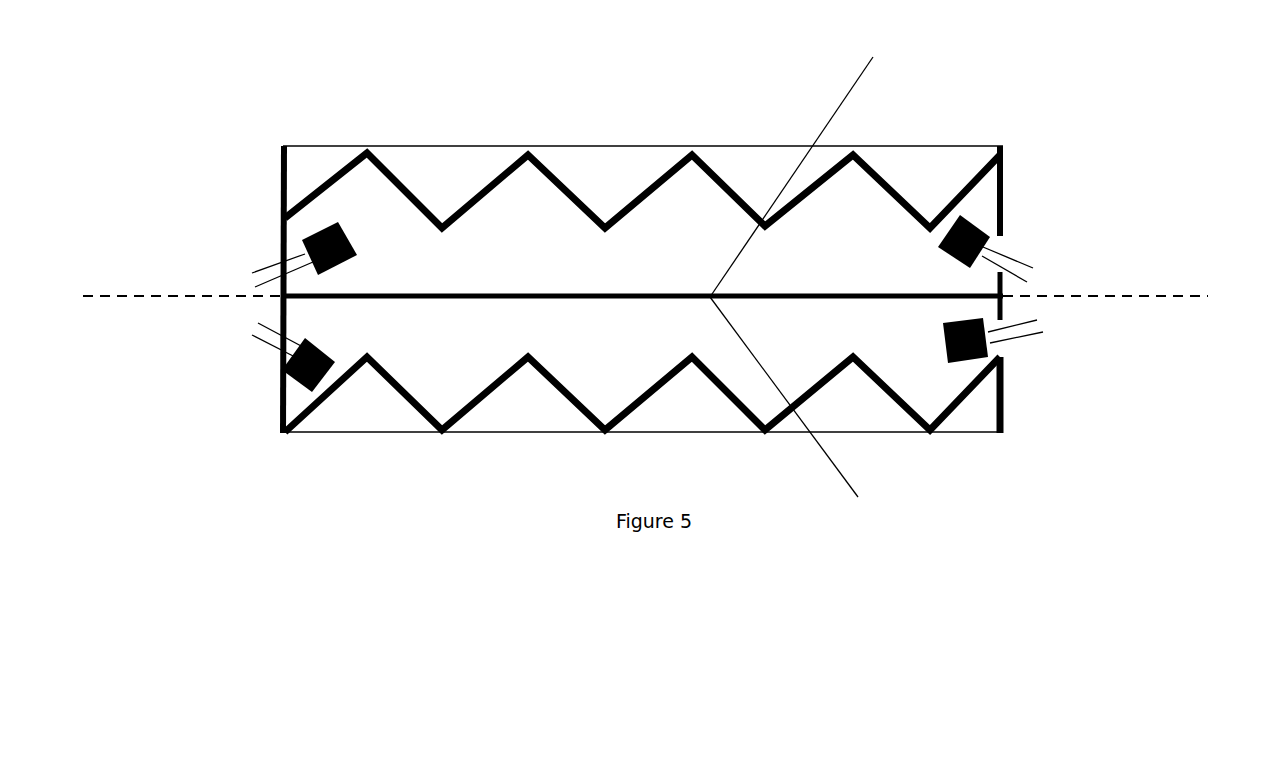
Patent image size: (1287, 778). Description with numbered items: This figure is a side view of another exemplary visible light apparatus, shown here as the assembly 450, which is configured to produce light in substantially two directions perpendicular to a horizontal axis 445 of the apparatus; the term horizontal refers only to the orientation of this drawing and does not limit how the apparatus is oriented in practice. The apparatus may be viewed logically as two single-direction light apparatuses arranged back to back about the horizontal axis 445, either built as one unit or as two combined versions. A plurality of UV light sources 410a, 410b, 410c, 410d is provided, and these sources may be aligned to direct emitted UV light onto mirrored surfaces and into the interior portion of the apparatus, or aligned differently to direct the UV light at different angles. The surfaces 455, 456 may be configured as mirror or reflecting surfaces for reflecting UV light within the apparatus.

The UV light source 410a is at (273, 263).
The UV light source 410b is at (983, 220).
The UV light source 410c is at (267, 352).
The UV light source 410d is at (1007, 350).
The horizontal axis 445 is at (1195, 281).
The light guide assembly 450 is at (1130, 164).
The surface 455 is at (798, 414).
The surface 456 is at (805, 161).